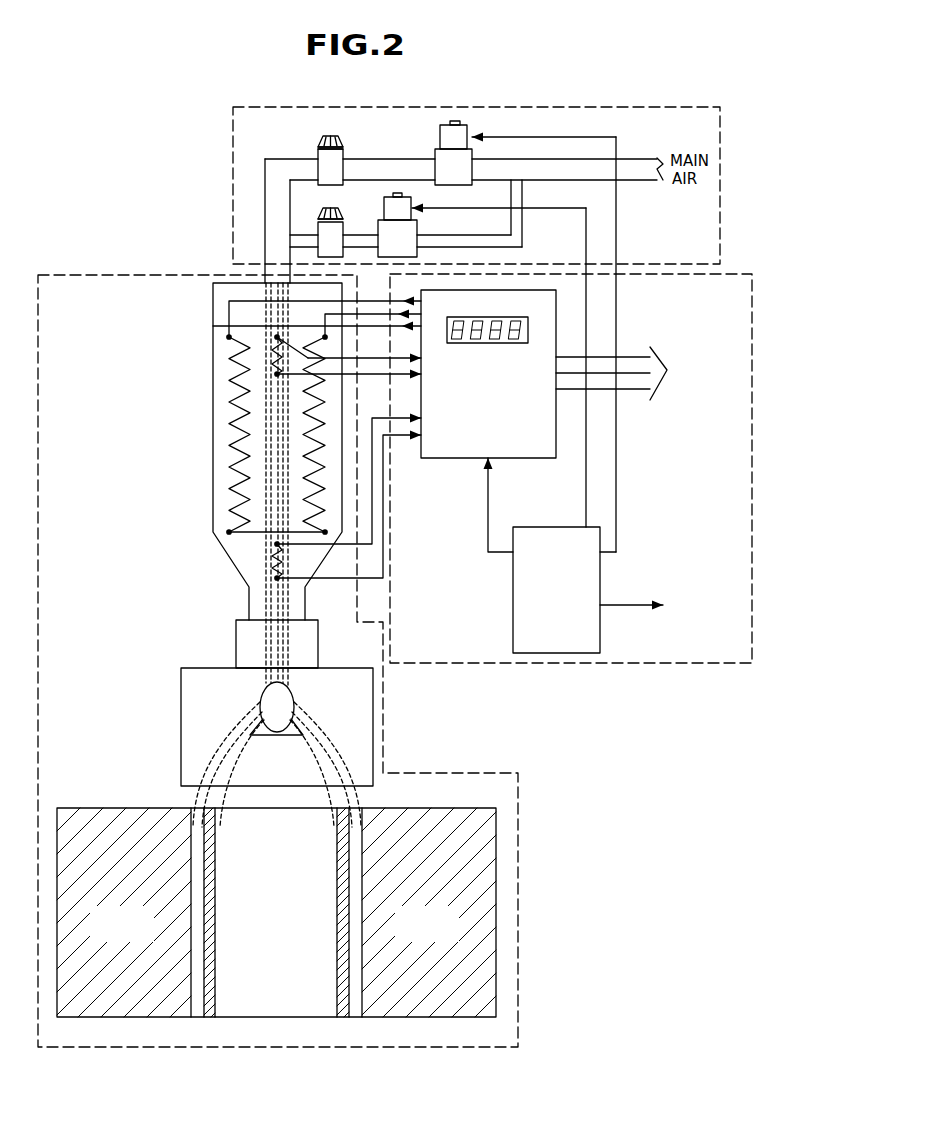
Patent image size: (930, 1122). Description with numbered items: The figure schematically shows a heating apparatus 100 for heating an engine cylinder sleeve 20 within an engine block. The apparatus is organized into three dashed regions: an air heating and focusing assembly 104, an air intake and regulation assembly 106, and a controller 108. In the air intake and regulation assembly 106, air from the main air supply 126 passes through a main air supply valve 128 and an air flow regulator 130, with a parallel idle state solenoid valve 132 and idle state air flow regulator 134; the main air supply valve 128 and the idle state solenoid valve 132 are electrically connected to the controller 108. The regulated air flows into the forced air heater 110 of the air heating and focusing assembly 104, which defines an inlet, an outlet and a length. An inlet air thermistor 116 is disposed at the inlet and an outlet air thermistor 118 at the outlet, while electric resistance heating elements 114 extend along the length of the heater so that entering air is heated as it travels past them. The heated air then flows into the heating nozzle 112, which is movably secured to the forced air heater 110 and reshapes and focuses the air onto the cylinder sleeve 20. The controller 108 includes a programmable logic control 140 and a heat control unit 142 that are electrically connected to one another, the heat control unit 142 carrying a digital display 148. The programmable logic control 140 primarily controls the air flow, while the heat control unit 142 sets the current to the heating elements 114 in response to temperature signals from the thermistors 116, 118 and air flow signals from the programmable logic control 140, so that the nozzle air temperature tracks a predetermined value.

The engine cylinder sleeve 20 is at (267, 953).
The heating apparatus 100 is at (129, 225).
The air heating and focusing assembly 104 is at (124, 309).
The air intake and regulation assembly 106 is at (681, 113).
The controller 108 is at (643, 312).
The forced air heater 110 is at (228, 475).
The heating nozzle 112 is at (181, 733).
The electric resistance heating elements 114 is at (310, 463).
The inlet air thermistor 116 is at (272, 358).
The outlet air thermistor 118 is at (272, 560).
The main air supply 126 is at (637, 165).
The main air supply valve 128 is at (452, 128).
The air flow regulator 130 is at (331, 162).
The idle state solenoid valve 132 is at (396, 233).
The idle state air flow regulator 134 is at (328, 234).
The programmable logic control (PLC) 140 is at (592, 568).
The heat control unit (HCU) 142 is at (452, 458).
The digital display 148 is at (464, 343).